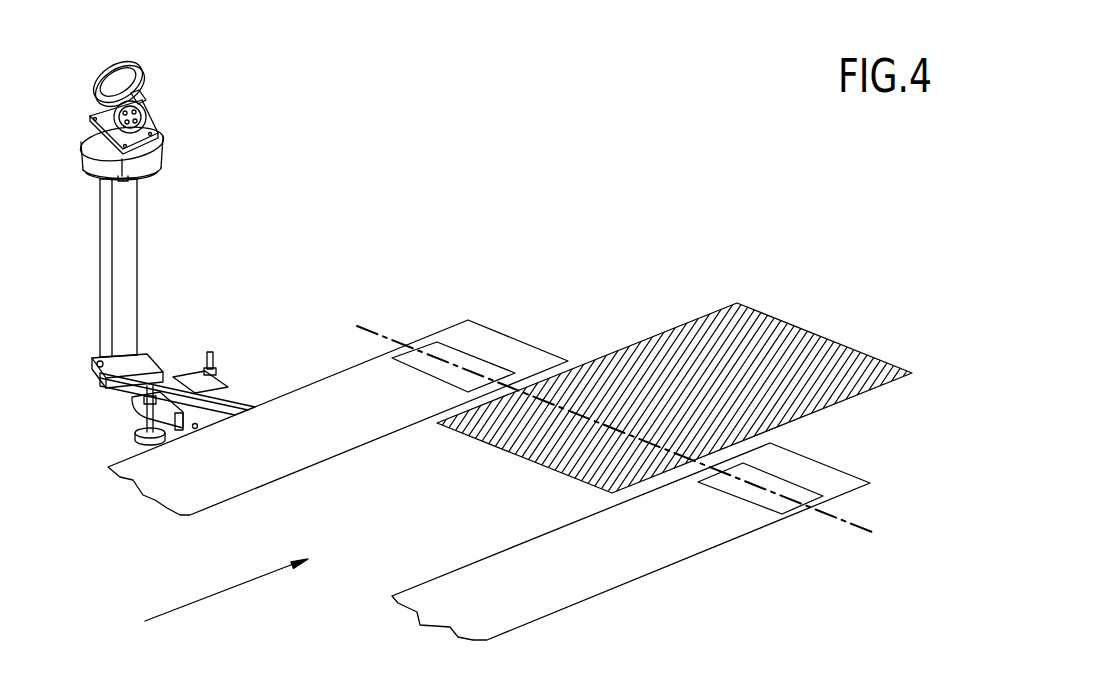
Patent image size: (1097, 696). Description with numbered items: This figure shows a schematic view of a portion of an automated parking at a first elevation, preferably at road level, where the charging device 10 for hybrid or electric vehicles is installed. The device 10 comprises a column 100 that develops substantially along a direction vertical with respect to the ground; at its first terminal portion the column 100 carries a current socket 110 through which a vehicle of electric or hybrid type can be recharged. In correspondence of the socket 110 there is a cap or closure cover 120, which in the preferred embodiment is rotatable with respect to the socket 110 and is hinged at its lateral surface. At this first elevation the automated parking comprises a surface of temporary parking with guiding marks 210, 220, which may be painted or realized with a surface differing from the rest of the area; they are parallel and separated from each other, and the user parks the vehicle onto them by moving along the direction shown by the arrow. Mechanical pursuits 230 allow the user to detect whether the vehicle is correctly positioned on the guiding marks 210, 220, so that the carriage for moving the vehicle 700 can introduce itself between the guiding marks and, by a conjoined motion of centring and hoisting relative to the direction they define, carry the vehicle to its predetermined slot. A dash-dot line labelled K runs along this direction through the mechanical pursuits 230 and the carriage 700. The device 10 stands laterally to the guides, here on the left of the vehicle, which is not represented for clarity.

The charging device 10 is at (241, 144).
The column 100 is at (124, 258).
The current socket 110 is at (143, 117).
The cap or closure cover 120 is at (128, 72).
The guiding mark 210 is at (350, 402).
The guiding mark 220 is at (628, 562).
The mechanical pursuits 230 is at (462, 360).
The carriage for moving the vehicle 700 is at (628, 353).
The cross direction line K is at (375, 303).